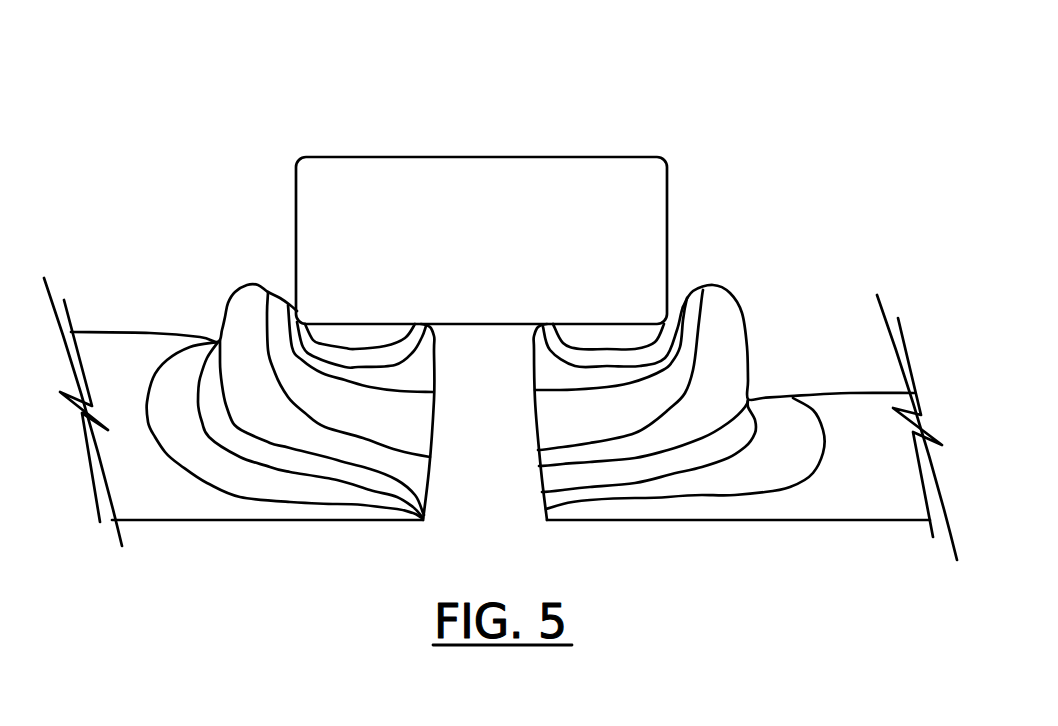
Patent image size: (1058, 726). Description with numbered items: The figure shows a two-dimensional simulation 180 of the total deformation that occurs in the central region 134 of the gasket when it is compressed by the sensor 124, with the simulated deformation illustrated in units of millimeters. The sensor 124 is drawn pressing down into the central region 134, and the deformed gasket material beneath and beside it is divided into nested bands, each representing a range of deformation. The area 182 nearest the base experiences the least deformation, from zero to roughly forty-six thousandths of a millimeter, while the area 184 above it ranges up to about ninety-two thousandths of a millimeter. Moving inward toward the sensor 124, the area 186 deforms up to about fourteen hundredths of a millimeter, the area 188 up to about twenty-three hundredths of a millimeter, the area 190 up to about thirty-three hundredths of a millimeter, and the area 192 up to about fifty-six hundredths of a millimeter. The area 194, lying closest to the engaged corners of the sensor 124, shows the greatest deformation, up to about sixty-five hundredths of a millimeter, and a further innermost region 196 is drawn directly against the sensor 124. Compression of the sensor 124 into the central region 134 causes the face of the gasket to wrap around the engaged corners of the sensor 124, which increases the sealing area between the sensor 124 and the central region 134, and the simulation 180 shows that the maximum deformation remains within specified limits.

The two-dimensional simulation 180 is at (407, 58).
The sensor 124 is at (408, 156).
The central region 134 is at (158, 308).
The fifth epitaxial layer 196 is at (612, 337).
The area 194 is at (565, 342).
The area 192 is at (565, 369).
The area 190 is at (588, 420).
The area 188 is at (718, 330).
The area 186 is at (743, 428).
The area 184 is at (802, 447).
The area 182 is at (827, 490).